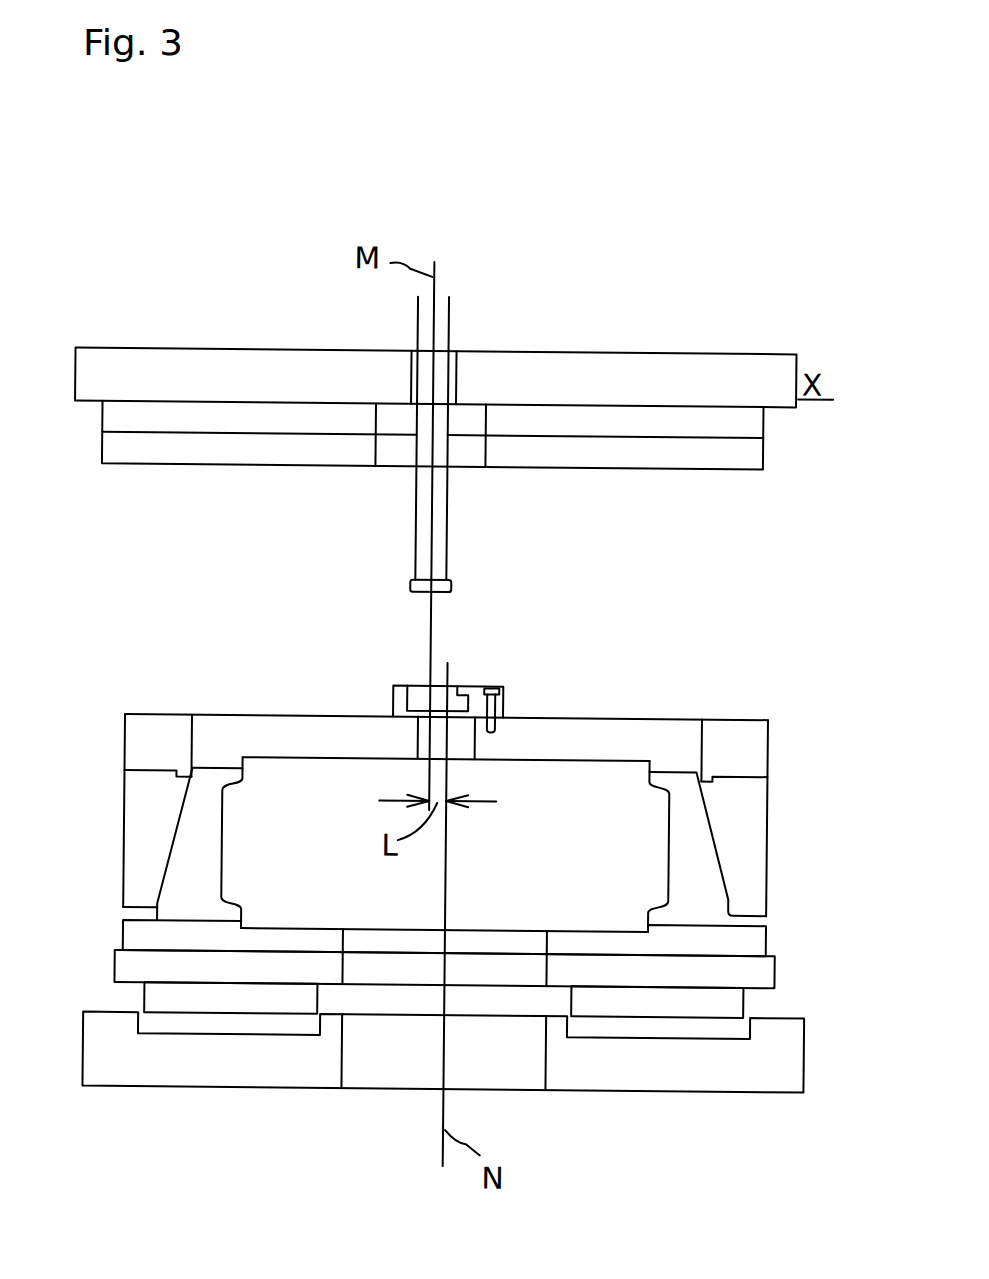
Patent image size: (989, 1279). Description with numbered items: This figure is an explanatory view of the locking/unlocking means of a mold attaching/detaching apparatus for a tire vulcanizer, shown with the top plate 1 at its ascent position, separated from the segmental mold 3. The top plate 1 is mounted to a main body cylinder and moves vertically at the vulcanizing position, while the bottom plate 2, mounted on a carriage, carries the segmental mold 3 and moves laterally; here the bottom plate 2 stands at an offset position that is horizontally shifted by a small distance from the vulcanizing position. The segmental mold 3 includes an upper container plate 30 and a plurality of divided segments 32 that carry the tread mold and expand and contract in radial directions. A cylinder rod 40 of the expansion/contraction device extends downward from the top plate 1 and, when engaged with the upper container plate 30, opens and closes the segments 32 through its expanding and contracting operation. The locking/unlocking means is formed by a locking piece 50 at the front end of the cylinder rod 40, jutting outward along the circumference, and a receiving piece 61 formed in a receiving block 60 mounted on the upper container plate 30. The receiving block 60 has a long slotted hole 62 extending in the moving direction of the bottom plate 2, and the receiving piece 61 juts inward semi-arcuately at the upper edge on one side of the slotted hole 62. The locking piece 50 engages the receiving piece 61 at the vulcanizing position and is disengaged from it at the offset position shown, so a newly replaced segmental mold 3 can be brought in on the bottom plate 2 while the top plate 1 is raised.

The top plate 1 is at (629, 358).
The bottom plate 2 is at (642, 1078).
The segmental mold 3 is at (455, 830).
The upper container plate 30 is at (643, 720).
The divided segments 32 is at (188, 851).
The cylinder rod 40 is at (441, 504).
The locking piece 50 is at (450, 583).
The receiving block 60 is at (392, 699).
The receiving piece 61 is at (468, 684).
The slotted hole 62 is at (415, 689).